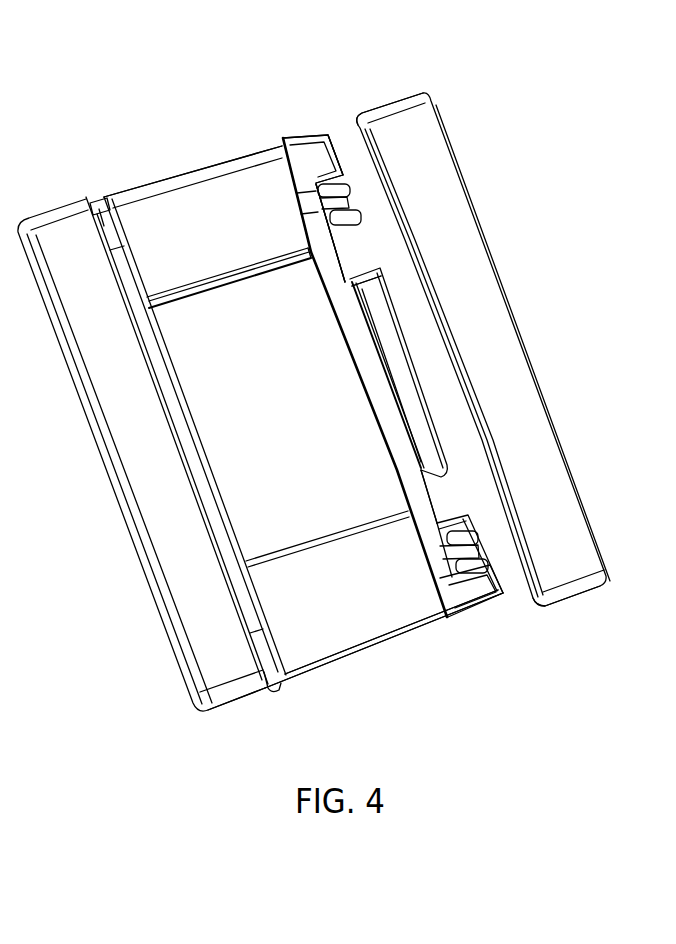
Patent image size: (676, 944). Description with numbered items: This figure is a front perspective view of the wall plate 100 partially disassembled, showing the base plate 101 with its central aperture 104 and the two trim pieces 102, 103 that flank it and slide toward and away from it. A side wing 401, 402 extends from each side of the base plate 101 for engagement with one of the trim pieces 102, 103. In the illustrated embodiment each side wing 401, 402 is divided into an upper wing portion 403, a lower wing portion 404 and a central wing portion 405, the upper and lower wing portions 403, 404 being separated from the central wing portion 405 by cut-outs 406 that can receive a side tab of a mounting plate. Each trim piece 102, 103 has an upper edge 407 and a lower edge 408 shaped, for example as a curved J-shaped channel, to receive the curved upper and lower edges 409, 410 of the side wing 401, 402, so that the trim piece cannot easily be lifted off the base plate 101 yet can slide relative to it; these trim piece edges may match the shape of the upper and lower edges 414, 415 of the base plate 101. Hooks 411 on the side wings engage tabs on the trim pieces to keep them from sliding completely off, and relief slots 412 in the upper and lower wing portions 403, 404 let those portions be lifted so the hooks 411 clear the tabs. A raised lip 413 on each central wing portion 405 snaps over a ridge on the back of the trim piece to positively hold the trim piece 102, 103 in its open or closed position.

The wall plate 100 is at (88, 103).
The base plate 101 is at (175, 177).
The trim piece 102 is at (122, 453).
The trim piece 103 is at (550, 425).
The central aperture 104 is at (261, 430).
The side wing 401 is at (90, 195).
The side wing 402 is at (297, 167).
The upper wing portion 403 is at (325, 173).
The lower wing portion 404 is at (470, 585).
The central wing portion 405 is at (408, 400).
The cut-out 406 is at (358, 247).
The upper edge 407 is at (385, 105).
The lower edge 408 is at (583, 592).
The upper edge 409 is at (326, 137).
The lower edge 410 is at (478, 613).
The hook 411 is at (320, 193).
The relief slot 412 is at (314, 218).
The raised lip 413 is at (410, 350).
The upper edge 414 is at (250, 158).
The lower edge 415 is at (383, 648).